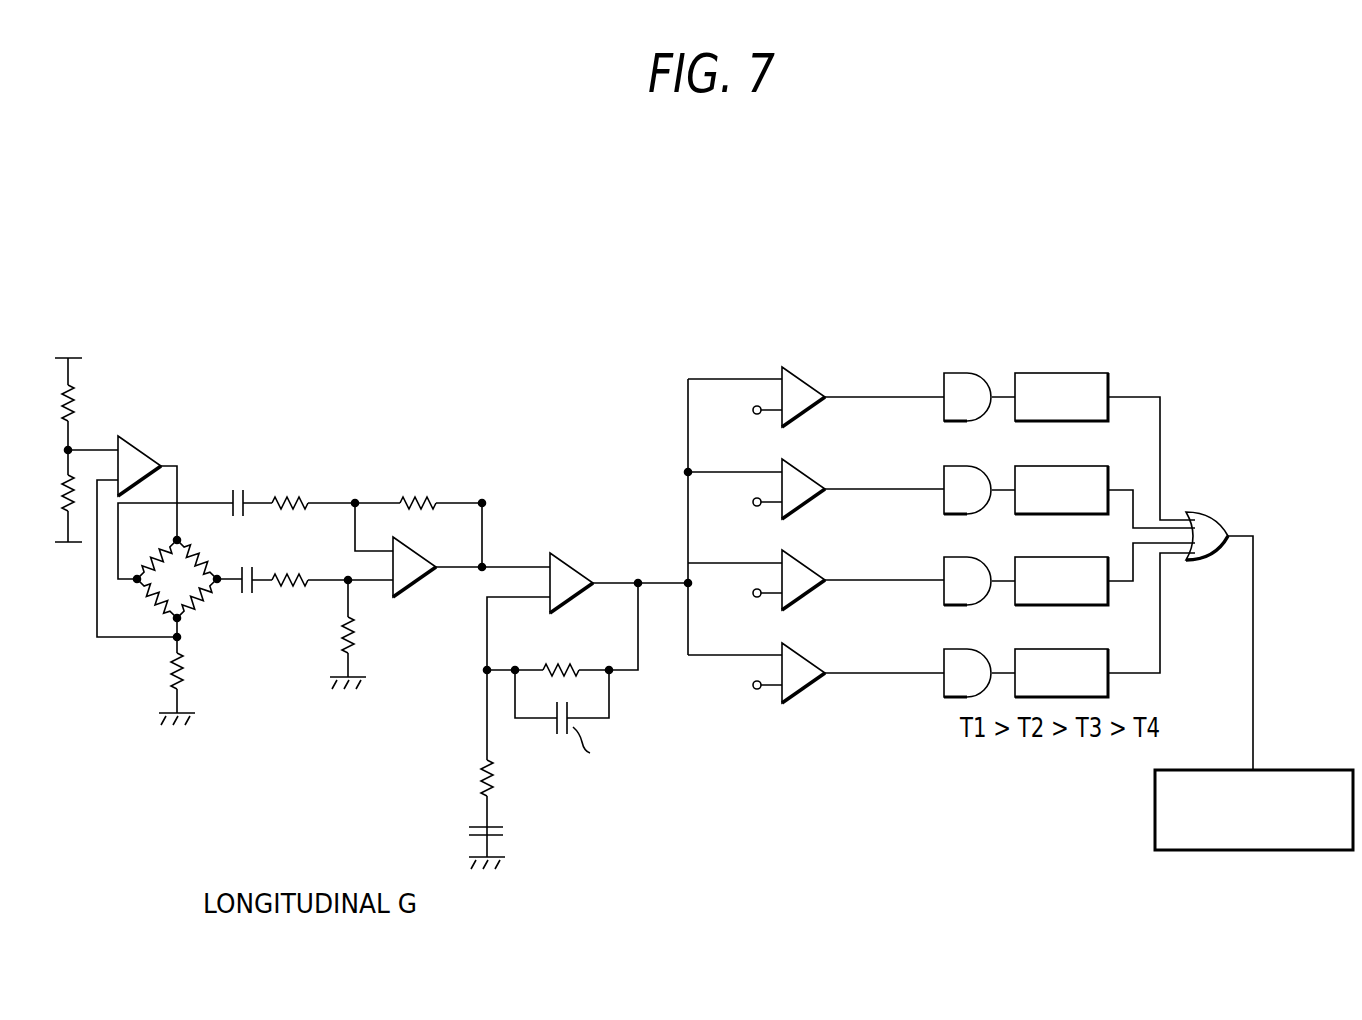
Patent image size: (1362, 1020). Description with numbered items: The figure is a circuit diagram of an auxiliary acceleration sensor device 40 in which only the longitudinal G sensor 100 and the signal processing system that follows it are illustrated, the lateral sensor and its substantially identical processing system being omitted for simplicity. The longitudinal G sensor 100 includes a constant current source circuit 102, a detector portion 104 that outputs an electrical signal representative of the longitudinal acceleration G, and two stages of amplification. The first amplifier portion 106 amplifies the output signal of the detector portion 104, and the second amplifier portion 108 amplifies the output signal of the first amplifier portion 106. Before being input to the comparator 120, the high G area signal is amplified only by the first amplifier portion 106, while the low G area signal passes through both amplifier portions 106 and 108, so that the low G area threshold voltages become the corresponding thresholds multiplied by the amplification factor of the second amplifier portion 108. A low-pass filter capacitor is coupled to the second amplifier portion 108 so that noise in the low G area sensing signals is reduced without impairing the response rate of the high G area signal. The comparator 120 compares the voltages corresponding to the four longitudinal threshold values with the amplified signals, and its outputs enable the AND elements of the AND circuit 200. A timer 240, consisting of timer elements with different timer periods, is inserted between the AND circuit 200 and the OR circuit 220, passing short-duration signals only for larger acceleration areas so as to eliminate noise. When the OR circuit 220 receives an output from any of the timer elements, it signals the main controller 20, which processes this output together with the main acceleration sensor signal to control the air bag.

The main controller 20 is at (1155, 812).
The auxiliary acceleration sensor device 40 is at (678, 302).
The longitudinal G sensor 100 is at (351, 373).
The constant current source circuit 102 is at (151, 456).
The detector portion 104 is at (178, 562).
The first amplifier portion 106 is at (480, 455).
The second amplifier portion 108 is at (652, 451).
The comparator 120 is at (814, 358).
The AND circuit 200 is at (976, 501).
The OR circuit 220 is at (1200, 562).
The timer 240 is at (1087, 348).